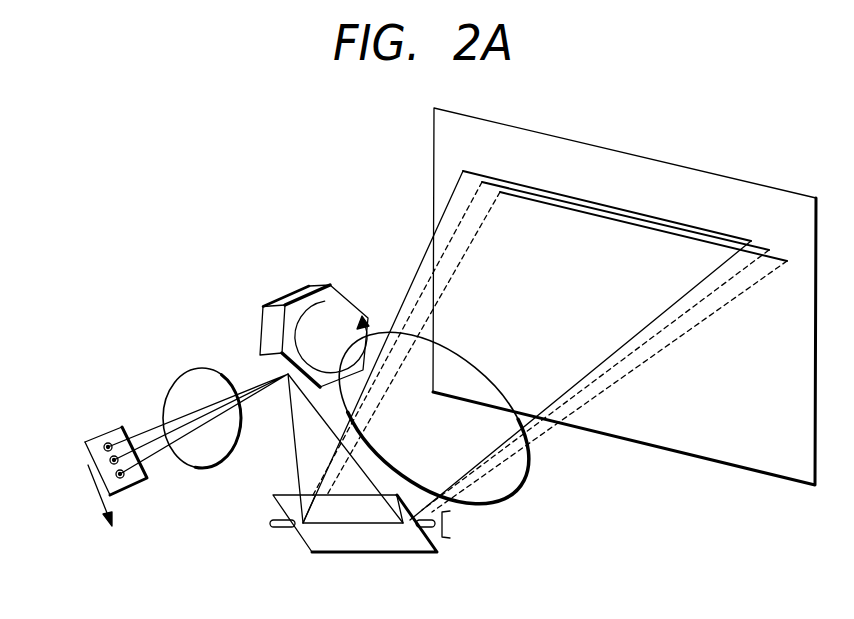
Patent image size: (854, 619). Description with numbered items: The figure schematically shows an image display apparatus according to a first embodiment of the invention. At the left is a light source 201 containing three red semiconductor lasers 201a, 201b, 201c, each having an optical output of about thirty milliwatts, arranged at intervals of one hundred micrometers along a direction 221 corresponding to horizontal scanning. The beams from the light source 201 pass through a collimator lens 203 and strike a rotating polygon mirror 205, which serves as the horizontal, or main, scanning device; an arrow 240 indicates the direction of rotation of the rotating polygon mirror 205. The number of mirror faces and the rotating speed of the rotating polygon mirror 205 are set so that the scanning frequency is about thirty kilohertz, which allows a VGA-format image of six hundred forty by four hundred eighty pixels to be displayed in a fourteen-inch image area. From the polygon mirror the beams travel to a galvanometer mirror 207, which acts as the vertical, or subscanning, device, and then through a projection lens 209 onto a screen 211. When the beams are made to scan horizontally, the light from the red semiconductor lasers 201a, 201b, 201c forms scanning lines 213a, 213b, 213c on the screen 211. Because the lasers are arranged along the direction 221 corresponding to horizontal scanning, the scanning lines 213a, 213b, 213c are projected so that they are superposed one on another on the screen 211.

The light source 201 is at (107, 425).
The red semiconductor laser 201a is at (100, 447).
The red semiconductor laser 201b is at (105, 461).
The red semiconductor laser 201c is at (113, 481).
The direction corresponding to horizontal scanning 221 is at (97, 512).
The collimator lens 203 is at (181, 369).
The rotating polygon mirror 205 is at (287, 298).
The arrow 240 is at (325, 300).
The galvanometer mirror 207 is at (335, 555).
The projection lens 209 is at (517, 492).
The screen 211 is at (718, 461).
The scanning line 213a is at (620, 207).
The scanning line 213b is at (672, 226).
The scanning line 213c is at (724, 245).